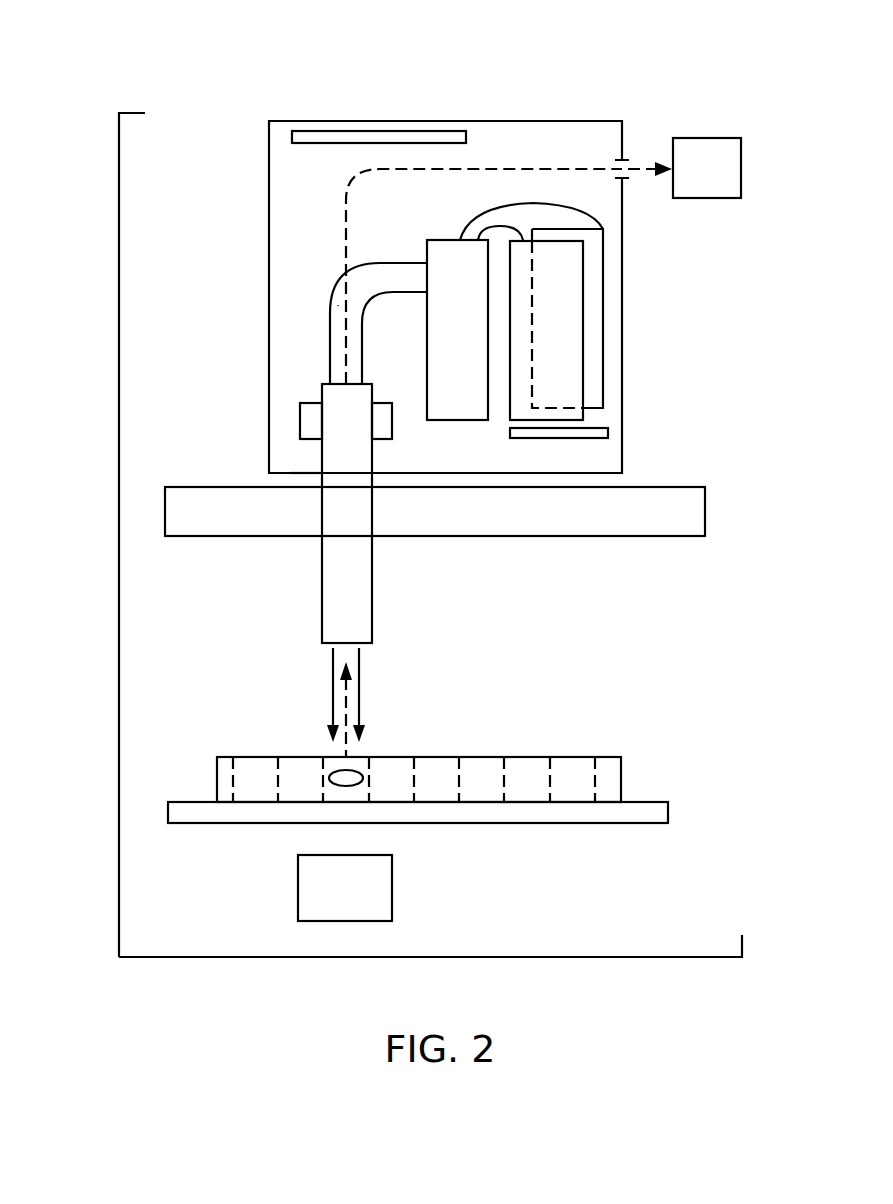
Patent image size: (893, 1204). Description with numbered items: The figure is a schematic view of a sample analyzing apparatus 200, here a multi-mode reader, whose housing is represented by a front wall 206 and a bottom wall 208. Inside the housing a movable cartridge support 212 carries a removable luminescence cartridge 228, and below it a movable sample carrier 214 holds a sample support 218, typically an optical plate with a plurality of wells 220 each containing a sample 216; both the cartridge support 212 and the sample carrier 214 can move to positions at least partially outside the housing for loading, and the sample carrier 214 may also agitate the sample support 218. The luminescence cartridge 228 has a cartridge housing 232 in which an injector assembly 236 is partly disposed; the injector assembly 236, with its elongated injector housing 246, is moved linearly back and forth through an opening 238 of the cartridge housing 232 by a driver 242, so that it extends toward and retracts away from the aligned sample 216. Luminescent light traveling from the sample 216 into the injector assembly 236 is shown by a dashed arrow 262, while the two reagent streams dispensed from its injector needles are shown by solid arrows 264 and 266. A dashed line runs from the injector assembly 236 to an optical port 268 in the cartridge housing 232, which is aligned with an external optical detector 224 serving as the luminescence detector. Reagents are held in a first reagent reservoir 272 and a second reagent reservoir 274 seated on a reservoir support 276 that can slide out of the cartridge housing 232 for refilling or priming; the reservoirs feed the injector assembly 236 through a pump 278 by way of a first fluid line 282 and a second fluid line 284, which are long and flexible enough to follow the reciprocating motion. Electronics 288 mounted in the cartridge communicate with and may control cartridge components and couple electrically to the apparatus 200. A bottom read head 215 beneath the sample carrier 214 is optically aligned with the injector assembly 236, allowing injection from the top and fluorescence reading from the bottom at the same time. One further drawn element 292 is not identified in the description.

The sample analyzing apparatus 200 is at (96, 68).
The front wall 206 is at (120, 923).
The bottom wall 208 is at (218, 958).
The cartridge support 212 is at (165, 513).
The sample carrier 214 is at (668, 813).
The bottom read head 215 is at (329, 900).
The sample 216 is at (335, 773).
The sample support 218 is at (621, 778).
The wells 220 is at (430, 792).
The optical detector 224 is at (741, 177).
The luminescence cartridge 228 is at (175, 235).
The cartridge housing 232 is at (269, 191).
The injector assembly 236 is at (268, 605).
The opening 238 is at (305, 473).
The driver 242 is at (300, 433).
The injector housing 246 is at (372, 583).
The dashed arrow 262 is at (360, 712).
The solid arrow 264 is at (333, 711).
The solid arrow 266 is at (359, 692).
The optical port 268 is at (627, 160).
The first reagent reservoir 272 is at (583, 355).
The second reagent reservoir 274 is at (603, 300).
The reservoir support 276 is at (608, 433).
The pump 278 is at (442, 240).
The first fluid line 282 is at (346, 376).
The second fluid line 284 is at (330, 339).
The electronics 288 is at (345, 135).
The fluid channel 292 is at (338, 305).